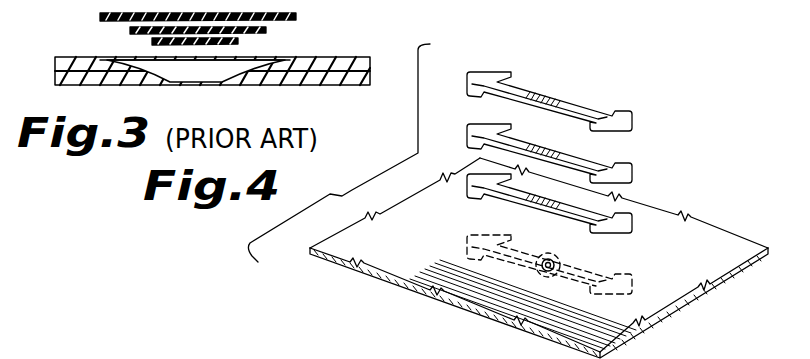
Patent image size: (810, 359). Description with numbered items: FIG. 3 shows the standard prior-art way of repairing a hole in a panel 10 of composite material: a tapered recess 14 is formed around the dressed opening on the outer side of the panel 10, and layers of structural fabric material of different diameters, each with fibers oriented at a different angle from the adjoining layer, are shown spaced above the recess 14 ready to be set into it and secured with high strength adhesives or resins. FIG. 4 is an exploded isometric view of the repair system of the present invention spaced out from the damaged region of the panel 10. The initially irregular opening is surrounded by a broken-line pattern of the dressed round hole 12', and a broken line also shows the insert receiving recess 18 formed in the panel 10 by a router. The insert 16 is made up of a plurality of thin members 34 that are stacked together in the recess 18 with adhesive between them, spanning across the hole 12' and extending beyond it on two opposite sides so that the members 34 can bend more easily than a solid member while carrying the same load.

In FIG. 4, the panel 10 is at (660, 283).
In FIG. 3, the dressed round hole 12' is at (212, 85).
In FIG. 4, the dressed round hole 12' is at (499, 304).
In FIG. 3, the tapered recess 14 is at (253, 58).
In FIG. 4, the insert 16 is at (610, 95).
In FIG. 4, the recess 18 is at (487, 268).
In FIG. 4, the members 34 is at (525, 93).